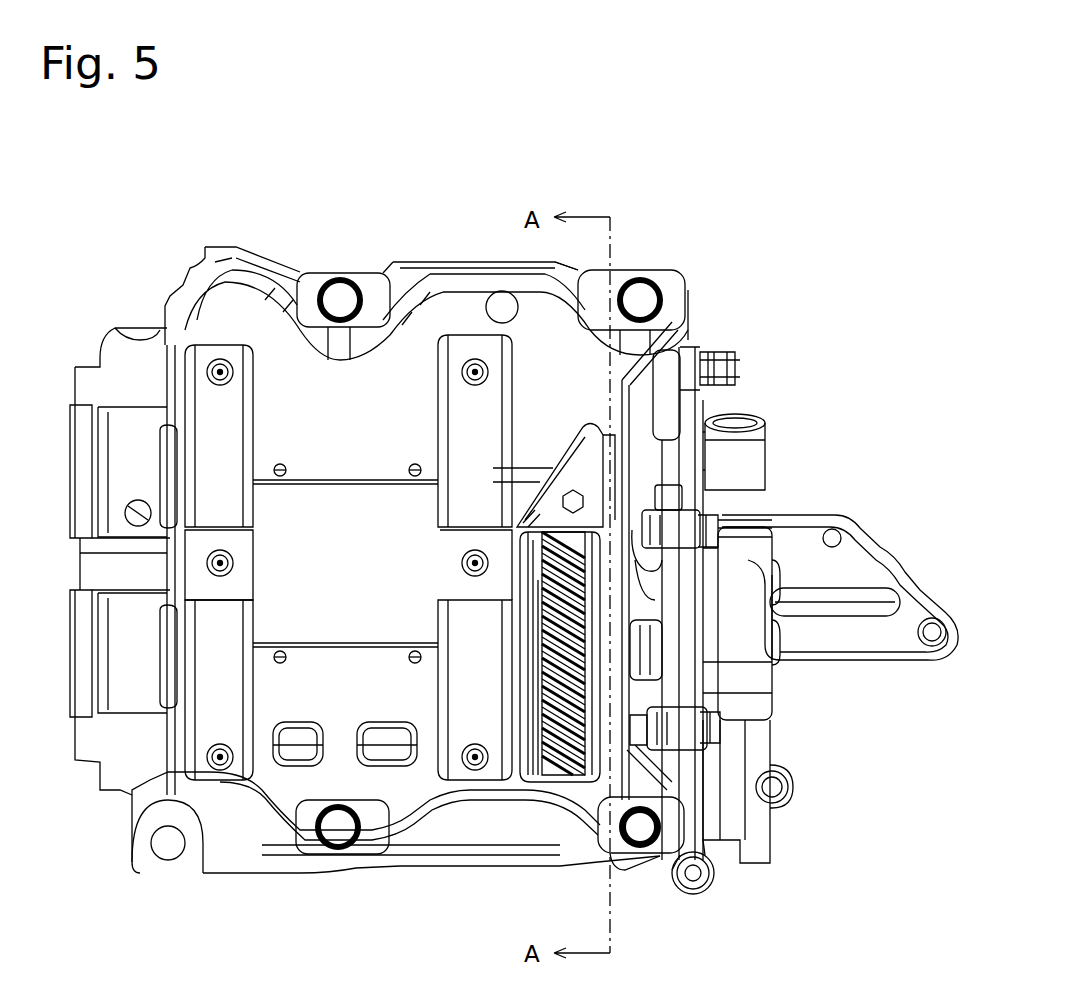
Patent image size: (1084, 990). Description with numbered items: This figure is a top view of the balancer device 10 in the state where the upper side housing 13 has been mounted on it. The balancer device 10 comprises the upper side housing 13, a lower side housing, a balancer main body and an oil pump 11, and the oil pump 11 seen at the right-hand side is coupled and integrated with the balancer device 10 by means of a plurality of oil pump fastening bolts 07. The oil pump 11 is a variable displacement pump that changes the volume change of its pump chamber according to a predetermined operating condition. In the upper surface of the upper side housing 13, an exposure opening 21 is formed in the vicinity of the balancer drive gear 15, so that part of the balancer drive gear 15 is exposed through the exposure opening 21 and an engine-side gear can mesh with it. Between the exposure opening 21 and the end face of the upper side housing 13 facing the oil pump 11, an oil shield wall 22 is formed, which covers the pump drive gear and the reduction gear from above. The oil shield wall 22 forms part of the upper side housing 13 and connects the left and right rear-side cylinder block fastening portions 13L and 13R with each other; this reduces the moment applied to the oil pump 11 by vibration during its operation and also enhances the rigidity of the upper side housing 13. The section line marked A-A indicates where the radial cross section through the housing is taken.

The upper side housing 13 is at (308, 383).
The right rear-side cylinder block fastening portion 13R is at (626, 288).
The left rear-side cylinder block fastening portion 13L is at (622, 852).
The balancer device 10 is at (700, 338).
The oil pump fastening bolt 07 is at (739, 366).
The oil pump 11 is at (877, 536).
The oil shield wall 22 is at (606, 733).
The exposure opening 21 is at (524, 770).
The balancer drive gear 15 is at (560, 770).